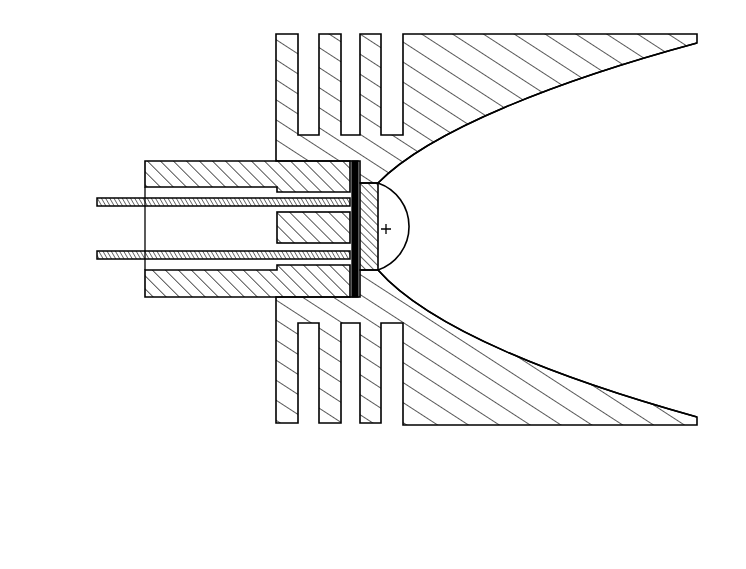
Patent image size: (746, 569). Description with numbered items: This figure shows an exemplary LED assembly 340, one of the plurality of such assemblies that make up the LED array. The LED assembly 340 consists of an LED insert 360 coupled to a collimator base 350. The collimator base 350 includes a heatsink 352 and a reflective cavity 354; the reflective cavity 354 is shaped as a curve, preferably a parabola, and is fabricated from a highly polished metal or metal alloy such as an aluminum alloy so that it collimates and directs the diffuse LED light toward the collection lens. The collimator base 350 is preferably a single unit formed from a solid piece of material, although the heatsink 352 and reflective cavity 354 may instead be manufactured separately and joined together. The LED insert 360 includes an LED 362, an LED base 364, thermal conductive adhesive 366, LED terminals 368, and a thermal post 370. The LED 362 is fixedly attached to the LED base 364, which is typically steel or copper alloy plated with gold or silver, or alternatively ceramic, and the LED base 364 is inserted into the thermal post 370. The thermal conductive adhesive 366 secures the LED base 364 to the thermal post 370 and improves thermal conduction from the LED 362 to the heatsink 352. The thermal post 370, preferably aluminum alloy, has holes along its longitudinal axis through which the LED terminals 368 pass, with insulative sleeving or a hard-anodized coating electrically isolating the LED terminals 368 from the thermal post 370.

The LED assembly 340 is at (179, 388).
The collimator base 350 is at (625, 426).
The heatsink 352 is at (371, 424).
The reflective cavity 354 is at (583, 383).
The LED insert 360 is at (249, 145).
The LED 362 is at (402, 255).
The LED base 364 is at (381, 192).
The thermal conductive adhesive 366 is at (350, 275).
The LED terminals 368 is at (97, 255).
The thermal post 370 is at (178, 160).